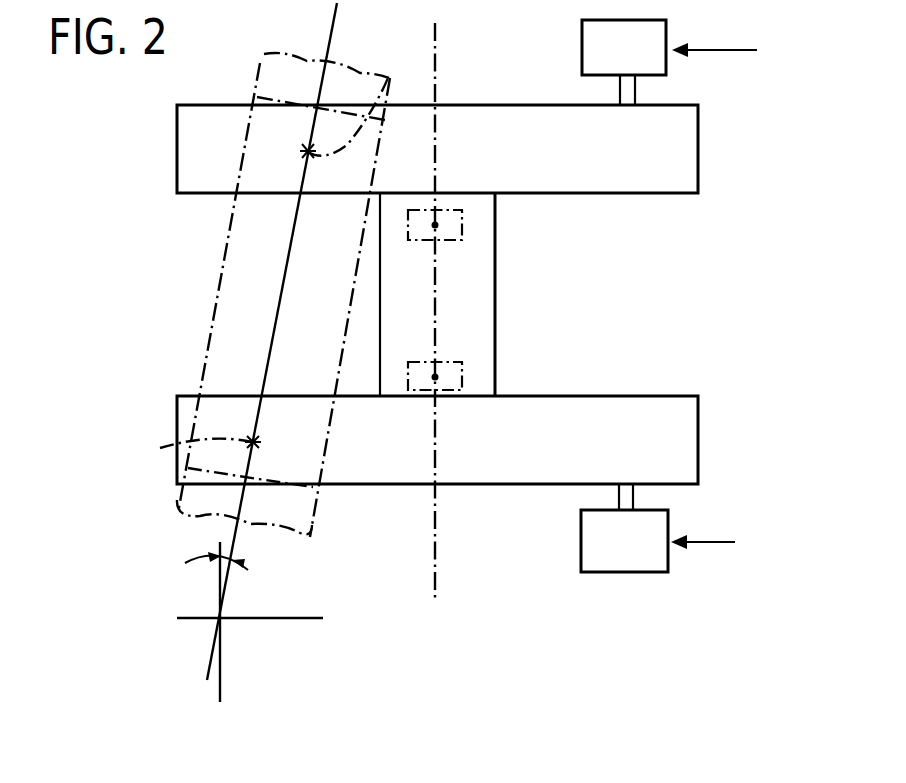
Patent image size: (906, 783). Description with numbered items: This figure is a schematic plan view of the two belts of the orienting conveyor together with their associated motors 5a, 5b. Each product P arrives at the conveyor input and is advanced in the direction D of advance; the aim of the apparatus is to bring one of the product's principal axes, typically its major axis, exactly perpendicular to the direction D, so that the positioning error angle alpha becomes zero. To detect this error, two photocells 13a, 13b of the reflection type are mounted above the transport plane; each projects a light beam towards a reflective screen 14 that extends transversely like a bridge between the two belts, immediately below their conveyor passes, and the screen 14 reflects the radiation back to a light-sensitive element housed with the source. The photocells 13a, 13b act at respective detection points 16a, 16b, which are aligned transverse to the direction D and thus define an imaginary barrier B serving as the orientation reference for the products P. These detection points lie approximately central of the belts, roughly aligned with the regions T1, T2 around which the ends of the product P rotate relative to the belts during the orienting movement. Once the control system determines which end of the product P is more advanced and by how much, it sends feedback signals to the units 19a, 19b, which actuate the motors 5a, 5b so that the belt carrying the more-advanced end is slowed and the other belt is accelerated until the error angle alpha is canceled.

The motor 5a is at (596, 44).
The motor 5b is at (633, 558).
The actuating unit 19a is at (740, 51).
The actuating unit 19b is at (730, 543).
The photocell 13a is at (462, 240).
The photocell 13b is at (462, 361).
The reflective screen 14 is at (490, 298).
The detection point 16a is at (435, 225).
The detection point 16b is at (435, 377).
The product P is at (264, 55).
The rotation point T1 is at (385, 73).
The rotation point T2 is at (219, 457).
The imaginary barrier B is at (440, 572).
The direction of advance D is at (265, 618).
The angle alpha is at (199, 564).